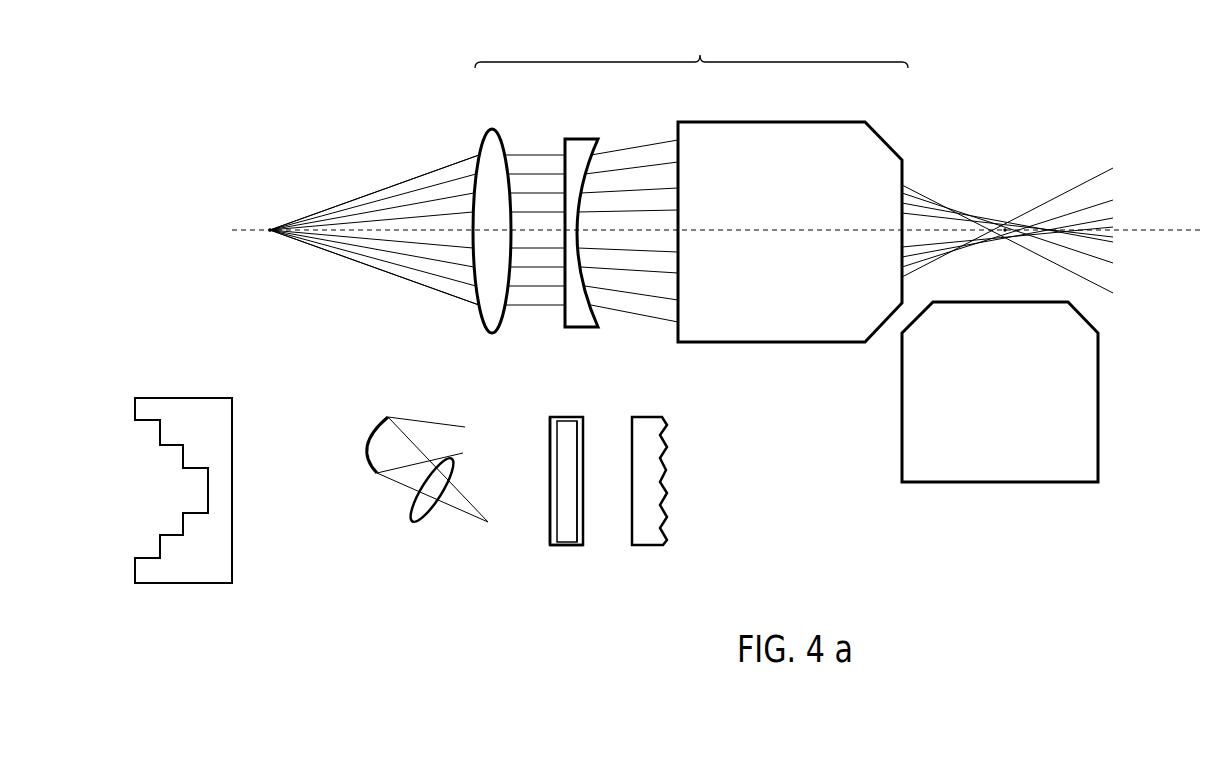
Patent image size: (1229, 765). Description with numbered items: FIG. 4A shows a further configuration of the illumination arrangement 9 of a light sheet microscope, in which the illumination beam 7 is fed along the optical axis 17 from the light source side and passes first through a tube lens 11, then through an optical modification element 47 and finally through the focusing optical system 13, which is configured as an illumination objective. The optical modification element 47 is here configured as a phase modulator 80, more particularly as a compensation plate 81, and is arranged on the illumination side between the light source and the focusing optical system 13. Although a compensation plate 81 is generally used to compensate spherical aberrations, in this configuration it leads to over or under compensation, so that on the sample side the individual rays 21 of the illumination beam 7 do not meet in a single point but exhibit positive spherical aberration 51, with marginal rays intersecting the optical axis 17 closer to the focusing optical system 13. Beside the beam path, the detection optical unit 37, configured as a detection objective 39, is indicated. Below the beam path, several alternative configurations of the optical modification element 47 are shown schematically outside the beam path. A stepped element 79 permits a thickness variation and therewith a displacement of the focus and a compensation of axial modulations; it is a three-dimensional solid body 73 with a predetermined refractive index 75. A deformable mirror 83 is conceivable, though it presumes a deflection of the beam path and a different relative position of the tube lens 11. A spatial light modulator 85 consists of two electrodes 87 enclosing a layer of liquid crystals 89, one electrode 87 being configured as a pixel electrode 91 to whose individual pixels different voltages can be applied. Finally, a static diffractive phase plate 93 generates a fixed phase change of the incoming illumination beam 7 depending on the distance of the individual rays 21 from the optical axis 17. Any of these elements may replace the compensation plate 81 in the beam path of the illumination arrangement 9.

The illumination beam 7 is at (410, 165).
The illumination arrangement 9 is at (700, 61).
The tube lens 11 is at (492, 128).
The focusing optical system 13 is at (768, 128).
The optical axis 17 is at (244, 228).
The rays 21 is at (350, 200).
The optical modification element 47 is at (576, 202).
The phase modulator 80 is at (576, 202).
The compensation plate 81 is at (570, 136).
The positive spherical aberration 51 is at (1006, 200).
The detection optical unit 37 is at (958, 392).
The detection objective 39 is at (914, 448).
The three-dimensional solid body 73 is at (220, 490).
The stepped element 79 is at (220, 421).
The refractive index 75 is at (222, 571).
The deformable mirror 83 is at (371, 463).
The spatial light modulator 85 is at (564, 481).
The electrodes 87 is at (549, 546).
The layer of liquid crystals 89 is at (573, 470).
The pixel electrode 91 is at (548, 428).
The static diffractive phase plate 93 is at (650, 417).